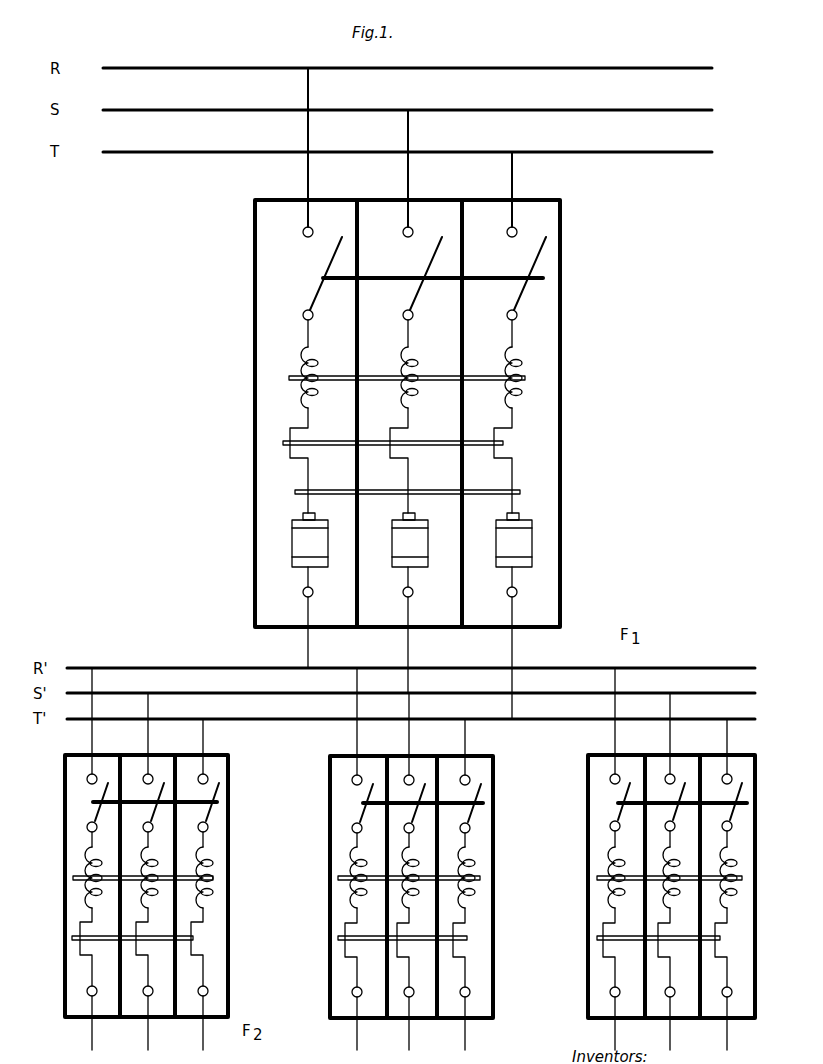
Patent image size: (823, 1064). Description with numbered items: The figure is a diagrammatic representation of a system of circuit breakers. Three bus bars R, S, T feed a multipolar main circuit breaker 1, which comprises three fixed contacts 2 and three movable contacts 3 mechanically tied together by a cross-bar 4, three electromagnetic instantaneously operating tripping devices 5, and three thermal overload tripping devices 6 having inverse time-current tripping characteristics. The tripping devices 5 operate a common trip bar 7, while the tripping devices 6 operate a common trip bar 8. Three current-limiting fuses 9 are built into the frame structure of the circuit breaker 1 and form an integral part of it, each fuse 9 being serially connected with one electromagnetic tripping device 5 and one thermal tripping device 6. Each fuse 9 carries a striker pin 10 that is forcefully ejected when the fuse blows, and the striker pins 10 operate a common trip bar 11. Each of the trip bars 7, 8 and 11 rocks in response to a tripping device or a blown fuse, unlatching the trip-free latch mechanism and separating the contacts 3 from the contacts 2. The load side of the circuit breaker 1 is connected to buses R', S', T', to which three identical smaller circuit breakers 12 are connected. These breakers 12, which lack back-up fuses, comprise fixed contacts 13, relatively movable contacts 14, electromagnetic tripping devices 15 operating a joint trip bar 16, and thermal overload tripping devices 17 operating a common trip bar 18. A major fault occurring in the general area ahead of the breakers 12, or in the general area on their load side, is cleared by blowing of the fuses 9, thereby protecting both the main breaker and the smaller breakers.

The main circuit breaker 1 is at (608, 233).
The fixed contacts 2 is at (305, 237).
The movable contacts 3 is at (312, 299).
The cross-bar 4 is at (545, 277).
The electromagnetic instantaneously operating tripping devices 5 is at (318, 362).
The thermal overload tripping devices 6 is at (300, 460).
The common trip bar 7 is at (522, 382).
The common trip bar 8 is at (504, 444).
The current-limiting fuses 9 is at (296, 552).
The striker pin 10 is at (318, 513).
The common trip bar 11 is at (521, 492).
The circuit breakers 12 is at (266, 768).
The fixed contacts 13 is at (88, 775).
The movable contacts 14 is at (97, 810).
The electromagnetic tripping devices 15 is at (89, 853).
The joint trip bar 16 is at (214, 878).
The thermal overload inverse time-current tripping devices 17 is at (91, 957).
The common trip bar 18 is at (194, 938).